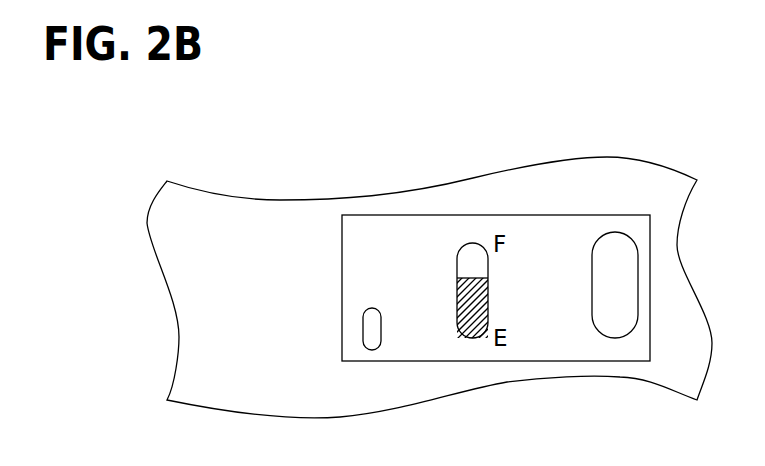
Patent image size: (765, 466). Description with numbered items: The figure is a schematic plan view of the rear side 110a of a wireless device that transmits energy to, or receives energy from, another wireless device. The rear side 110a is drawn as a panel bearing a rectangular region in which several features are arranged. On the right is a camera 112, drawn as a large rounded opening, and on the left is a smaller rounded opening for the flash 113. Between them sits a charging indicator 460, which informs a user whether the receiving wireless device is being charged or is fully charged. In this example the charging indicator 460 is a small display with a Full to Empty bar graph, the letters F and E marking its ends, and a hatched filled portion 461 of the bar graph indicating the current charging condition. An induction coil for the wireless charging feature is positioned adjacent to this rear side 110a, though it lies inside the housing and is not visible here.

The rear side 110a is at (277, 398).
The camera 112 is at (592, 264).
The flash 113 is at (371, 308).
The charging indicator 460 is at (457, 264).
The indicator (hatched fill region) 461 is at (488, 298).